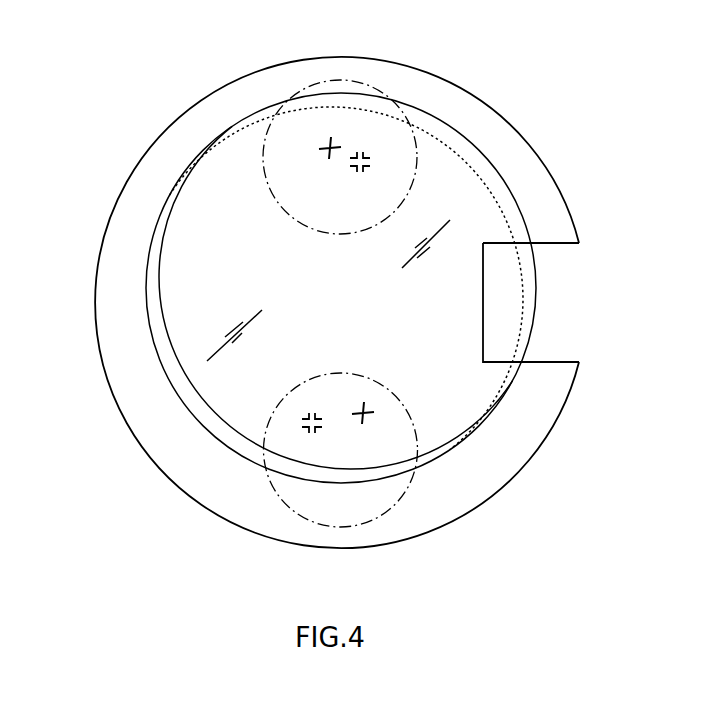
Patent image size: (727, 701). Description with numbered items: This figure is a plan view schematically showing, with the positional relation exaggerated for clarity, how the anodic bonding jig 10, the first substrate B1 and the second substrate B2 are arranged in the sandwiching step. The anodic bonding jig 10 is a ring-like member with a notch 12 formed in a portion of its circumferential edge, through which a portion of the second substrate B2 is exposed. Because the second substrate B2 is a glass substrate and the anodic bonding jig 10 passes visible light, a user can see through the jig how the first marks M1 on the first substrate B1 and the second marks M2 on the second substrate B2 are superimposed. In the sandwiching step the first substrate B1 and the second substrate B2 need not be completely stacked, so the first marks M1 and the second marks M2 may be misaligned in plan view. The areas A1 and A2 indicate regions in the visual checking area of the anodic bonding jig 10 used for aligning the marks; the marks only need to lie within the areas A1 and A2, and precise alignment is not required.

The anodic bonding jig 10 is at (115, 238).
The notch 12 is at (560, 334).
The area A1 is at (362, 82).
The area A2 is at (413, 417).
The first substrate B1 is at (521, 270).
The second substrate B2 is at (536, 300).
The first marks M1 is at (286, 442).
The second marks M2 is at (384, 432).